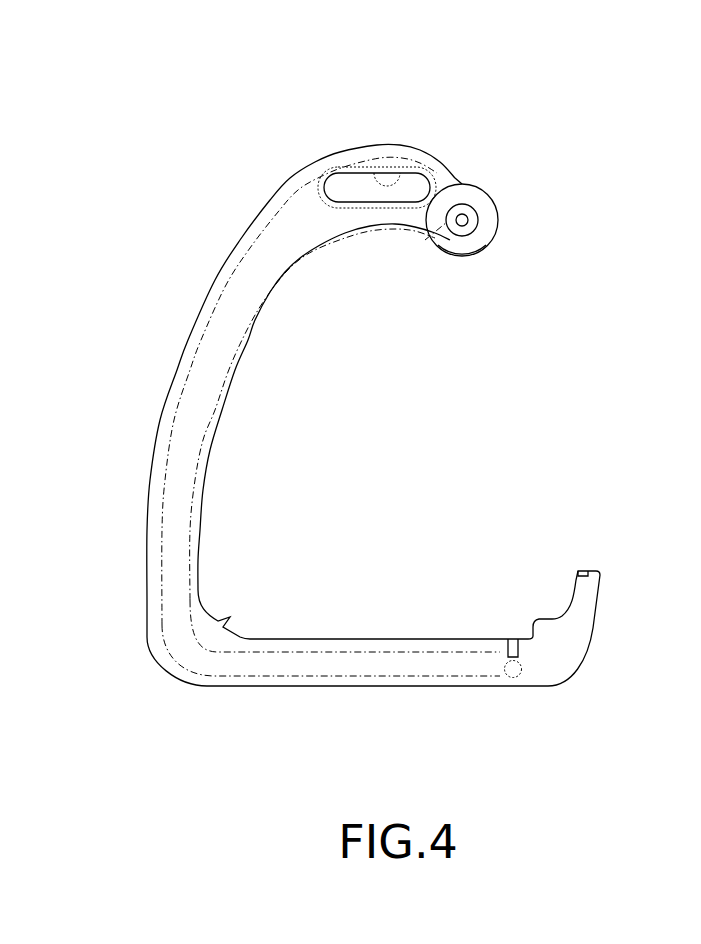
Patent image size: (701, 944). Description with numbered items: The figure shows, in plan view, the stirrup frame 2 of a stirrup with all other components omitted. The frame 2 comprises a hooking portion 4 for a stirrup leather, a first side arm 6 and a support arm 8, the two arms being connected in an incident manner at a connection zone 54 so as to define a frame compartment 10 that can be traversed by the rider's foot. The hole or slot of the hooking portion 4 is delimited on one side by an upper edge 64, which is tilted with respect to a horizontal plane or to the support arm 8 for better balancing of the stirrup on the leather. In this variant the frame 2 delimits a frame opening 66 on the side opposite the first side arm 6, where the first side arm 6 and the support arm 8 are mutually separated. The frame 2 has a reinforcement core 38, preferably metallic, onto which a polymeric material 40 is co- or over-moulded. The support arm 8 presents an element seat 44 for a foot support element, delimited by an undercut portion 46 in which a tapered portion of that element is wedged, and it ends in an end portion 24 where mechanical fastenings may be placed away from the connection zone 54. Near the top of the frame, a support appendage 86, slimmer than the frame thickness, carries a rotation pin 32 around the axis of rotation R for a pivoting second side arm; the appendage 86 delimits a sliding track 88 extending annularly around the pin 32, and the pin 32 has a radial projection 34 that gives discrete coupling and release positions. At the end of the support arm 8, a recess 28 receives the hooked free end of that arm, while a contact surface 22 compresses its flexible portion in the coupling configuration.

The stirrup frame 2 is at (604, 250).
The hooking portion 4 is at (345, 186).
The first side arm 6 is at (157, 435).
The support arm 8 is at (277, 690).
The frame compartment 10 is at (272, 456).
The contact surface 22 is at (598, 572).
The end portion 24 is at (591, 670).
The recess 28 is at (576, 568).
The rotation pin 32 is at (458, 203).
The radial projection 34 is at (425, 240).
The reinforcement core 38 is at (199, 344).
The polymeric material 40 is at (227, 265).
The element seat 44 is at (405, 639).
The undercut portion 46 is at (230, 626).
The connection zone 54 is at (158, 662).
The upper edge 64 is at (402, 172).
The frame opening 66 is at (540, 404).
The support appendage 86 is at (458, 262).
The sliding track 88 is at (482, 203).
The axis of rotation R is at (468, 222).